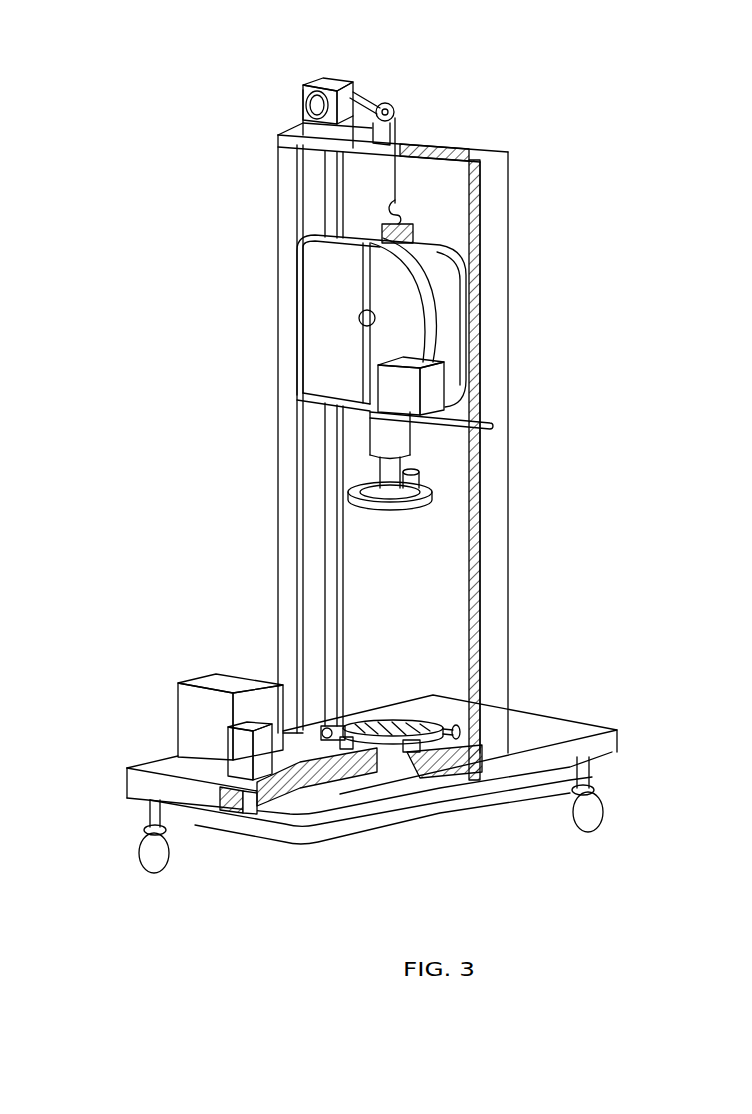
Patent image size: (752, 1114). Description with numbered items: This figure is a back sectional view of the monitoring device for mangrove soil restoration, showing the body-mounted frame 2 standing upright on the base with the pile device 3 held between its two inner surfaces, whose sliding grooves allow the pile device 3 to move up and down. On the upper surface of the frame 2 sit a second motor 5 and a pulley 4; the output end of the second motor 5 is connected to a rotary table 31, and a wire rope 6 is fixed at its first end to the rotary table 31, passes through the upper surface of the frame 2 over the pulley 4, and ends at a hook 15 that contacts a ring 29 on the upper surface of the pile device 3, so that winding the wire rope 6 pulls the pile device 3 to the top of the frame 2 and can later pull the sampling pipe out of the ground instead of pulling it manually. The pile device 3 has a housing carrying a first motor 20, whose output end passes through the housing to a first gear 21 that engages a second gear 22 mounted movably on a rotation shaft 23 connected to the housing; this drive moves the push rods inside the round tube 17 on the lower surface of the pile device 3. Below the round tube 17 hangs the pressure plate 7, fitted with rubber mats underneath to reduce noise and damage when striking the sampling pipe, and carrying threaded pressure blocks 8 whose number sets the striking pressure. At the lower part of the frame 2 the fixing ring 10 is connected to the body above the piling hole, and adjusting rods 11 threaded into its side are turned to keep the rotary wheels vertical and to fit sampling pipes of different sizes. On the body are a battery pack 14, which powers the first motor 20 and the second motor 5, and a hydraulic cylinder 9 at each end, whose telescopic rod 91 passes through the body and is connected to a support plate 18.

The frame 2 is at (498, 496).
The pile device 3 is at (333, 285).
The pulley 4 is at (383, 110).
The second motor 5 is at (332, 82).
The wire rope 6 is at (358, 93).
The pressure plate 7 is at (399, 508).
The pressure block 8 is at (414, 481).
The hydraulic cylinder 9 is at (242, 752).
The fixing ring 10 is at (388, 741).
The adjusting rod 11 is at (326, 730).
The battery pack 14 is at (198, 712).
The hook 15 is at (396, 207).
The round tube 17 is at (389, 438).
The support plate 18 is at (355, 832).
The first motor 20 is at (434, 392).
The first gear 21 is at (446, 385).
The second gear 22 is at (416, 330).
The rotation shaft 23 is at (361, 322).
The ring 29 is at (414, 233).
The rotary table 31 is at (305, 95).
The telescopic rod 91 is at (258, 800).